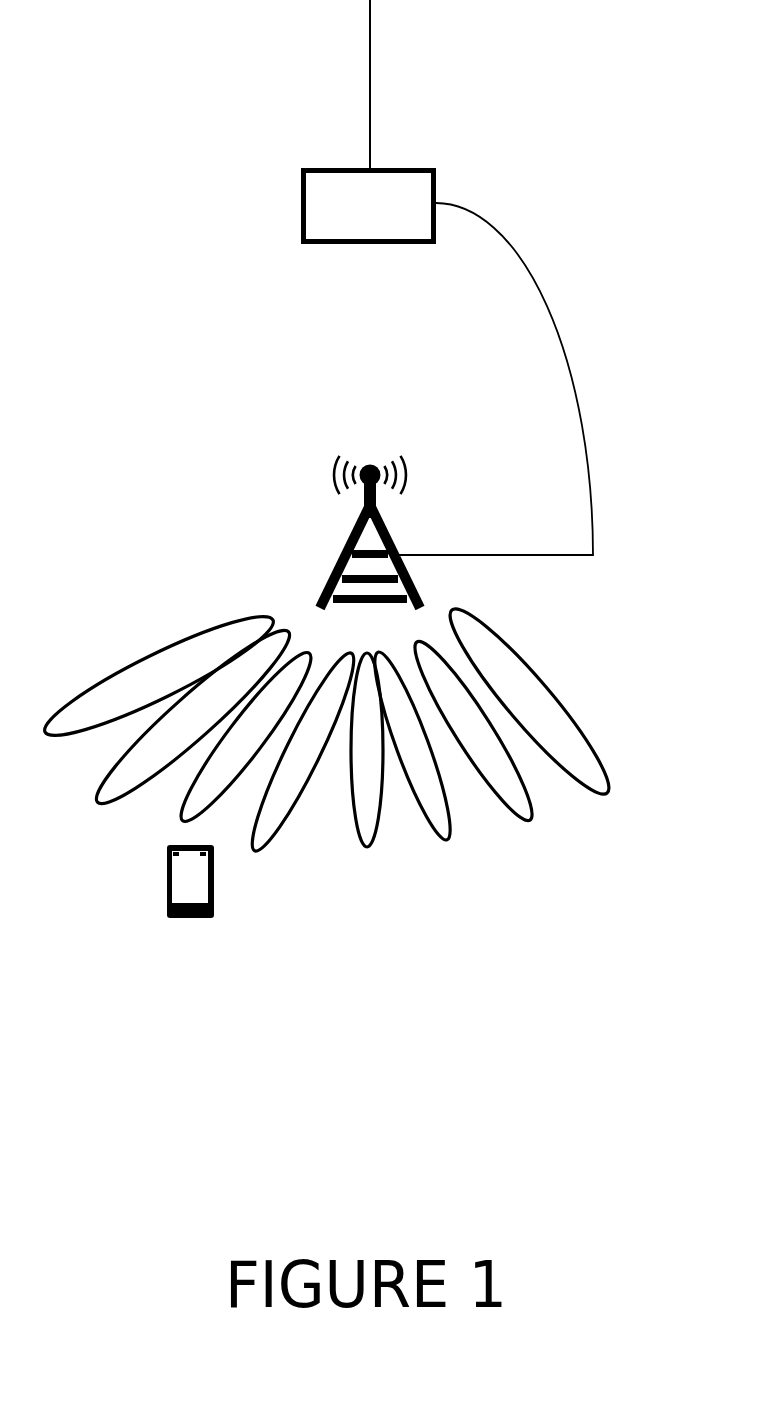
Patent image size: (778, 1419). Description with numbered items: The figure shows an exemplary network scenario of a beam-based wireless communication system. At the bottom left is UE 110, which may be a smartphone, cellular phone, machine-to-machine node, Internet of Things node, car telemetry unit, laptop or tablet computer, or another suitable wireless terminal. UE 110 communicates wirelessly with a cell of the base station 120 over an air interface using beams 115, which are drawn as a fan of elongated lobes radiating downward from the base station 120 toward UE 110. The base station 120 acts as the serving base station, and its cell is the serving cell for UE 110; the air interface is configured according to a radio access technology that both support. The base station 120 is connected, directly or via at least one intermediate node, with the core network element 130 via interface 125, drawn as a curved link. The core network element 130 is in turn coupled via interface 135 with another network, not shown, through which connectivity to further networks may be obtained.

The UE 110 is at (168, 918).
The beams 115 is at (123, 667).
The base station 120 is at (388, 540).
The interface 125 is at (563, 340).
The core network element 130 is at (369, 206).
The interface 135 is at (370, 107).